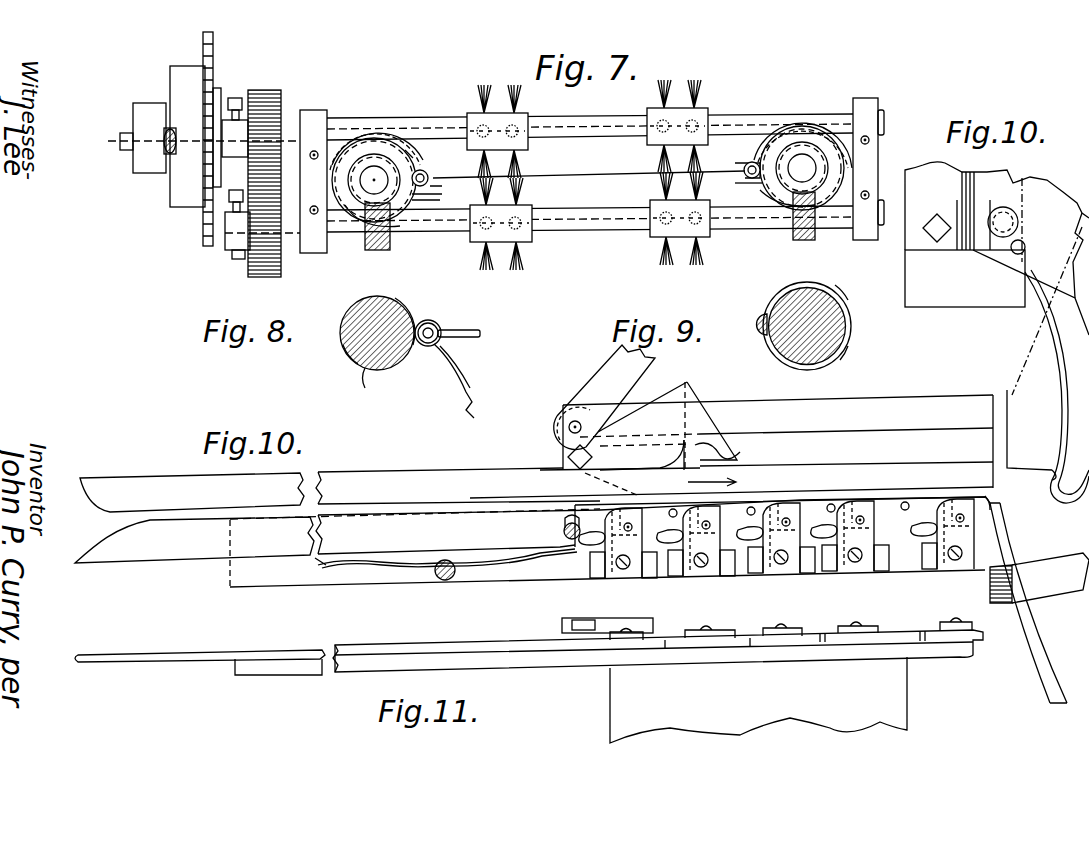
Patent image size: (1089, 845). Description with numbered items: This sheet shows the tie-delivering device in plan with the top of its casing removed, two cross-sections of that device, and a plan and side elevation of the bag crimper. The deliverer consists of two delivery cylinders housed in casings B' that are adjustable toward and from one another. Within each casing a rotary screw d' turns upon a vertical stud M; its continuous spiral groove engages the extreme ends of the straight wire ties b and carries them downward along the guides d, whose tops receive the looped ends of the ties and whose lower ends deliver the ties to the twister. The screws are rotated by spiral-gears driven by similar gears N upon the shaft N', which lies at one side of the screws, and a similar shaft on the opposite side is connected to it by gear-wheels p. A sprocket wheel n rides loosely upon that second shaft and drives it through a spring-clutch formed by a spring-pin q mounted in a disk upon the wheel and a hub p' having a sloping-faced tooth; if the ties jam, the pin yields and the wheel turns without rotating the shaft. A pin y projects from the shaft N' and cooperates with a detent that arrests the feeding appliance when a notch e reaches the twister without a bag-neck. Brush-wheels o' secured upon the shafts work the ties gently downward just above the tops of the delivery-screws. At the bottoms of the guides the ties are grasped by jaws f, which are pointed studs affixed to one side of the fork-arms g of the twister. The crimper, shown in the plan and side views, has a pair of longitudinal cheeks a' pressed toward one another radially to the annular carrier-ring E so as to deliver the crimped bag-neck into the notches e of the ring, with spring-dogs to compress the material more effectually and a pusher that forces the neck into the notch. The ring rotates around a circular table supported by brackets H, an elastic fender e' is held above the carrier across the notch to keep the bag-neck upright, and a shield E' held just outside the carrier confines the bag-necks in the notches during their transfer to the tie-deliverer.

In FIG. 7, the gear-wheels p is at (347, 174).
In FIG. 7, the hub p' is at (137, 158).
In FIG. 7, the spring-pin q is at (156, 111).
In FIG. 7, the coupling sleeve q' is at (161, 172).
In FIG. 7, the sprocket wheel n is at (206, 139).
In FIG. 7, the pin y is at (232, 255).
In FIG. 7, the rotary screws d' is at (596, 175).
In FIG. 8, the rotary screws d' is at (364, 326).
In FIG. 9, the rotary screws d' is at (862, 350).
In FIG. 7, the vertical stud M is at (383, 184).
In FIG. 7, the spiral-gears N is at (574, 240).
In FIG. 7, the shaft N' is at (590, 236).
In FIG. 7, the casings B' is at (591, 153).
In FIG. 7, the ties b is at (598, 177).
In FIG. 8, the ties b is at (462, 330).
In FIG. 7, the brush-wheels o' is at (588, 175).
In FIG. 8, the jaws f is at (436, 328).
In FIG. 8, the fork-arms g is at (472, 360).
In FIG. 9, the guides d is at (791, 324).
In FIG. 10, the longitudinal cheeks a' is at (530, 517).
In FIG. 11, the longitudinal cheeks a' is at (529, 649).
In FIG. 10, the brackets H is at (950, 252).
In FIG. 10, the annular carrier-ring E is at (997, 316).
In FIG. 10, the notches e is at (1037, 485).
In FIG. 10, the elastic fender e' is at (1036, 386).
In FIG. 10, the shield E' is at (1026, 599).